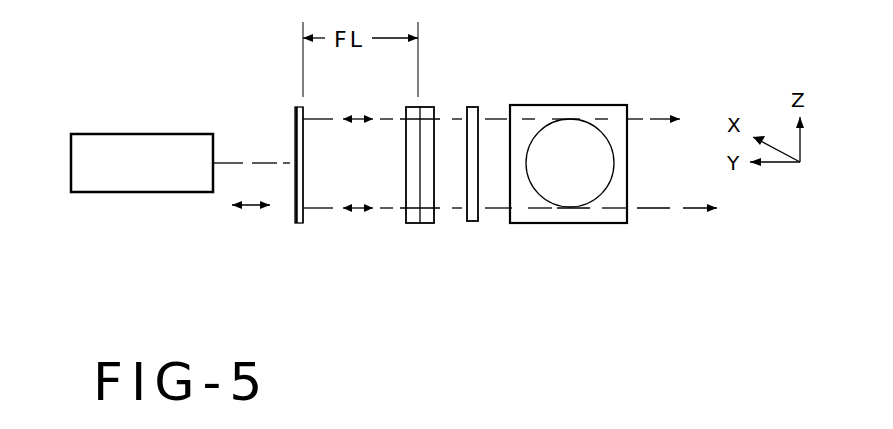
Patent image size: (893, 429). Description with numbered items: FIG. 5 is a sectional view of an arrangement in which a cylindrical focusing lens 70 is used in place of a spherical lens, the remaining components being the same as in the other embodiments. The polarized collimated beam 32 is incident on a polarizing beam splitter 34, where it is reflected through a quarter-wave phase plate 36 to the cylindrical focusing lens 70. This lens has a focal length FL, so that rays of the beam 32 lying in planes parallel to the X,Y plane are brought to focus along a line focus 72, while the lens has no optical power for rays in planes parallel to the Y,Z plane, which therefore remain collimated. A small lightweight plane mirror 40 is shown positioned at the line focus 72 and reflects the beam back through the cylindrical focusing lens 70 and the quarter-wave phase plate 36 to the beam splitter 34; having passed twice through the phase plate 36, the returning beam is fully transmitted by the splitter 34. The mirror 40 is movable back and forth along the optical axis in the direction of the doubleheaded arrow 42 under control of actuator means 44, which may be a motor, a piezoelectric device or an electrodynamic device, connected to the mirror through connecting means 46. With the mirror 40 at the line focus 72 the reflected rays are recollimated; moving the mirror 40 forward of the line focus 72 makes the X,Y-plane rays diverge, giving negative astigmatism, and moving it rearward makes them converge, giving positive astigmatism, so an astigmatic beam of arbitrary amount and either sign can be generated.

The collimated beam 32 is at (610, 185).
The polarizing beam splitter 34 is at (595, 105).
The quarter-wave phase plate 36 is at (473, 107).
The plane mirror 40 is at (295, 131).
The doubleheaded arrow 42 is at (258, 210).
The actuator means 44 is at (110, 134).
The connecting means 46 is at (242, 163).
The cylindrical focusing lens 70 is at (414, 223).
The line focus 72 is at (305, 180).